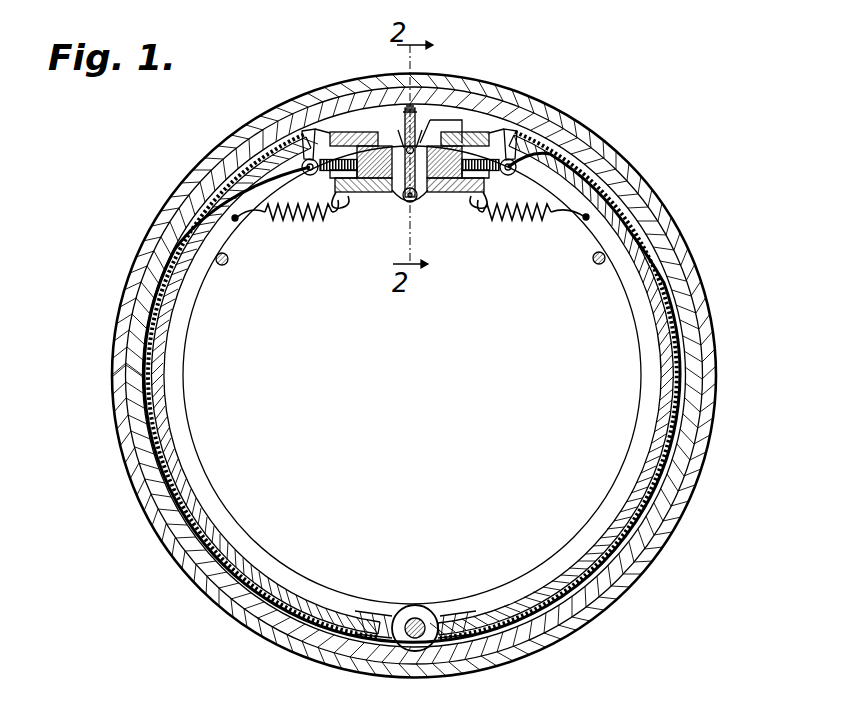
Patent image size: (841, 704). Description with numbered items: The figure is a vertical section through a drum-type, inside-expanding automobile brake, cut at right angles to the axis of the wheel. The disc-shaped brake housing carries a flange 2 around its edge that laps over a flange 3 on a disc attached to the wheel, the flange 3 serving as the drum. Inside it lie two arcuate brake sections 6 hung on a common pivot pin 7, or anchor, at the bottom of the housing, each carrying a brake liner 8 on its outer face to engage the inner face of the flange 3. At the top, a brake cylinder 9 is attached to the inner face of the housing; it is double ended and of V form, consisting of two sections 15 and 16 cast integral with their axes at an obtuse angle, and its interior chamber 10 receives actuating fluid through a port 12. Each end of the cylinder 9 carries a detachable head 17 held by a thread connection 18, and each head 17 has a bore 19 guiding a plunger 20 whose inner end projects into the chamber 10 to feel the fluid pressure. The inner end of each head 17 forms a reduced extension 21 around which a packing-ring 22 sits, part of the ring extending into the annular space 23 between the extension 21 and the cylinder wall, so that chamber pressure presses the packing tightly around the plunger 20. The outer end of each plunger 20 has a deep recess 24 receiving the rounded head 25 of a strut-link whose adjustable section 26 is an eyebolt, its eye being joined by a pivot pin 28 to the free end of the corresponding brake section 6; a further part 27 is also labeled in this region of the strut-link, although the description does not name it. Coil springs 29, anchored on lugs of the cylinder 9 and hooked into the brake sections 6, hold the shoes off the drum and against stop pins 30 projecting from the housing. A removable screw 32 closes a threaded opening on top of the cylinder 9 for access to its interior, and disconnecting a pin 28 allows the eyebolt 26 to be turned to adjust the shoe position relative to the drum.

The flange 2 is at (703, 312).
The flange 3 is at (660, 245).
The brake sections 6 is at (645, 411).
The pivot pin 7 is at (420, 622).
The brake liners 8 is at (675, 432).
The brake cylinder 9 is at (393, 200).
The chamber 10 is at (455, 148).
The port 12 is at (424, 204).
The cylinder section 15 is at (365, 132).
The cylinder section 16 is at (493, 134).
The detachable head 17 is at (328, 128).
The thread connection 18 is at (347, 130).
The bore 19 is at (338, 214).
The plunger 20 is at (313, 132).
The reduced extension 21 is at (397, 140).
The packing-ring 22 is at (370, 200).
The annular space 23 is at (420, 125).
The recess 24 is at (348, 210).
The rounded head 25 is at (449, 200).
The adjustable section 26 is at (320, 175).
The bracket 27 is at (470, 118).
The pivot pin 28 is at (258, 140).
The coil springs 29 is at (290, 225).
The stop pins 30 is at (223, 266).
The removable screw 32 is at (440, 130).